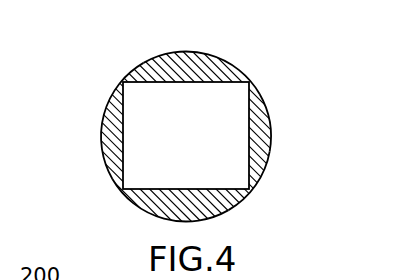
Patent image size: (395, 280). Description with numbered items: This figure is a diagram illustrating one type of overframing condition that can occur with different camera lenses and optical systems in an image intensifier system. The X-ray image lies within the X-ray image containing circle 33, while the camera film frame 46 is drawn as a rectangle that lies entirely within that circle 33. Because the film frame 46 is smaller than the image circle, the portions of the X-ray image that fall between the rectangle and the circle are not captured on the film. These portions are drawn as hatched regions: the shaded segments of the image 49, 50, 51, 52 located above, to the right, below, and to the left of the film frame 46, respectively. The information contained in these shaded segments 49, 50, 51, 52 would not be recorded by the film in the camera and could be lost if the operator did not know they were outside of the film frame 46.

The shaded segment of the image 49 is at (213, 72).
The X-ray image containing circle 33 is at (242, 72).
The shaded segment of the image 50 is at (270, 128).
The film frame 46 is at (265, 166).
The shaded segment of the image 51 is at (154, 201).
The shaded segment of the image 52 is at (103, 148).